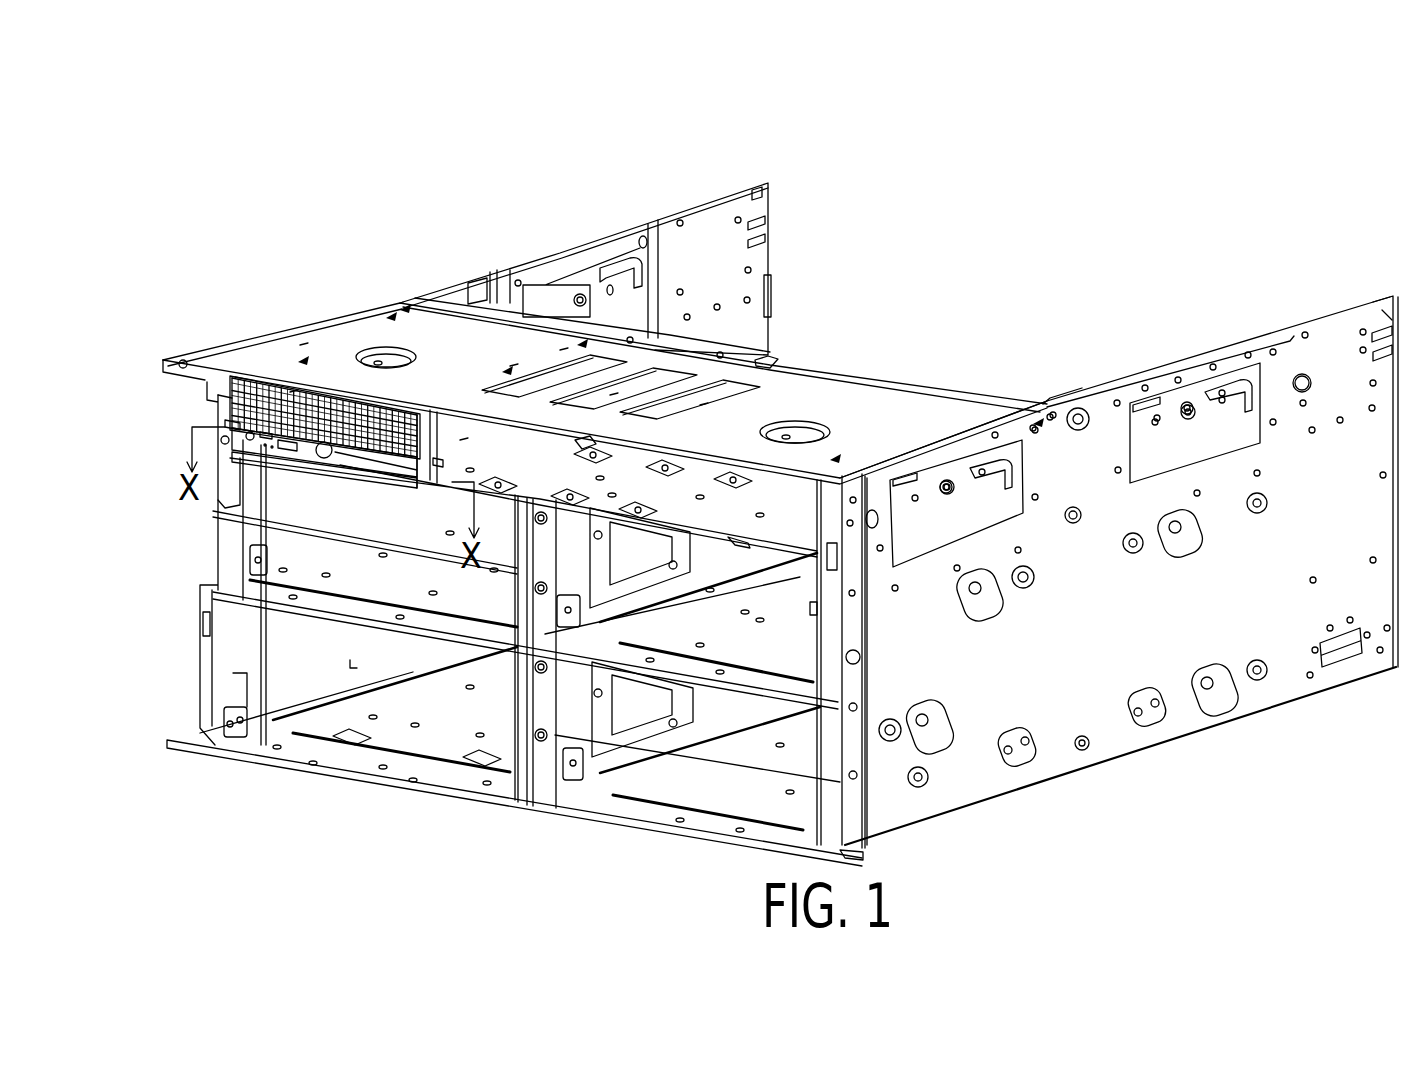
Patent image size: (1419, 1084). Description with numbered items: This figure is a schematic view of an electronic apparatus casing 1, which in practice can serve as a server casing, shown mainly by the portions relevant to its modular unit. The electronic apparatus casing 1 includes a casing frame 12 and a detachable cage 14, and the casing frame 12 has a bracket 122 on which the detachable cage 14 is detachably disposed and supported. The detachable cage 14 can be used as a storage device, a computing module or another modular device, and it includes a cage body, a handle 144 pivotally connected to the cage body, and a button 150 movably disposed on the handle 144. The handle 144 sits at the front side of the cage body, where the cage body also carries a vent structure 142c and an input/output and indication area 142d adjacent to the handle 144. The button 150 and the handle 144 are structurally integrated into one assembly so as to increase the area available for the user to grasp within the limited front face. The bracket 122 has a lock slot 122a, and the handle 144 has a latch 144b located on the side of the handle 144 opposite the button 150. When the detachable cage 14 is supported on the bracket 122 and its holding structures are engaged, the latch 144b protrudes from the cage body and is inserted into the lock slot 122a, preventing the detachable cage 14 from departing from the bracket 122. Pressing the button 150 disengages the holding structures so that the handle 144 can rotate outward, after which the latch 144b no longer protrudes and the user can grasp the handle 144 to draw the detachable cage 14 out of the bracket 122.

The electronic apparatus casing 1 is at (1108, 148).
The casing frame 12 is at (555, 262).
The bracket 122 is at (438, 322).
The lock slot 122a is at (437, 437).
The detachable cage 14 is at (261, 474).
The vent structure 142c is at (312, 390).
The input/output and indication area 142d is at (268, 450).
The handle 144 is at (377, 465).
The latch 144b is at (583, 446).
The button 150 is at (325, 458).